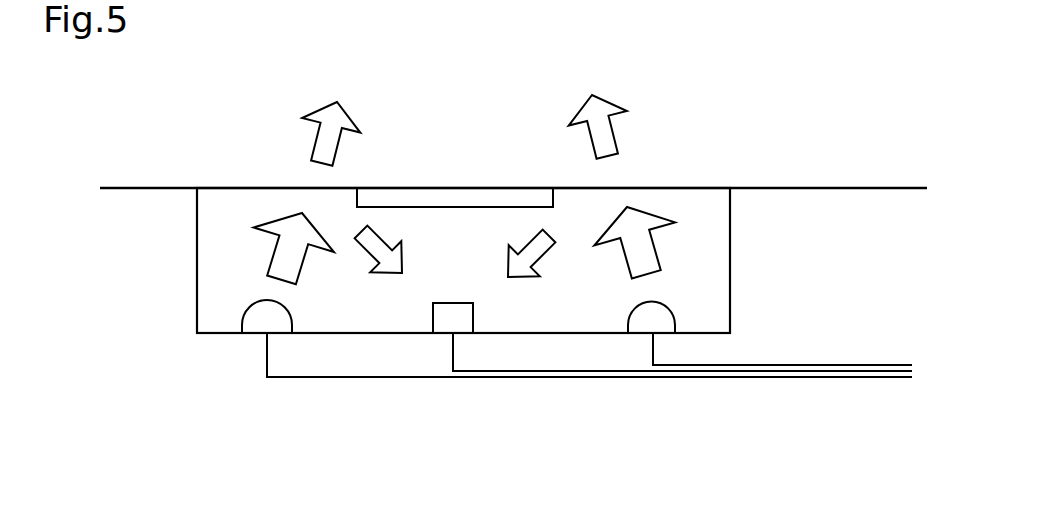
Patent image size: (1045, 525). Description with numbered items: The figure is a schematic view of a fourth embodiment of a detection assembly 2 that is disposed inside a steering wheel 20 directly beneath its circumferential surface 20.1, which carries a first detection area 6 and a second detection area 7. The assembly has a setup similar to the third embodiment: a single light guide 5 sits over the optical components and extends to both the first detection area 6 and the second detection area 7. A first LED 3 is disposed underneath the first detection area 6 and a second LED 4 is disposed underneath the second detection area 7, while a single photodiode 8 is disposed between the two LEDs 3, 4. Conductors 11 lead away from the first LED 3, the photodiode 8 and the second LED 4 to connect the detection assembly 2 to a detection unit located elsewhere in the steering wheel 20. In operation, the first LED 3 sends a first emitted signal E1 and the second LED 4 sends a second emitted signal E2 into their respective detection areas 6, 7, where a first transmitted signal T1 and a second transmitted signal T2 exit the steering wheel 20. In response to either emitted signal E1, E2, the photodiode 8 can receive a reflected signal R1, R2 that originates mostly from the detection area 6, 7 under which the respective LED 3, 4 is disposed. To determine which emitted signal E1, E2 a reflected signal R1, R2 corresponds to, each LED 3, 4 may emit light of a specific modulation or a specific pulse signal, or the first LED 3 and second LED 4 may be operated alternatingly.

The circumferential surface 20.1 is at (148, 186).
The steering wheel 20 is at (146, 260).
The detection assembly 2 is at (738, 239).
The first detection area 6 is at (280, 186).
The second detection area 7 is at (658, 186).
The light guide 5 is at (446, 267).
The first LED 3 is at (245, 313).
The second LED 4 is at (678, 305).
The photodiode 8 is at (473, 317).
The conductors 11 is at (422, 377).
The first transmitted signal T1 is at (370, 147).
The second transmitted signal T2 is at (627, 132).
The first emitted signal E1 is at (248, 248).
The second emitted signal E2 is at (668, 258).
The first reflected signal R1 is at (398, 232).
The second reflected signal R2 is at (527, 227).